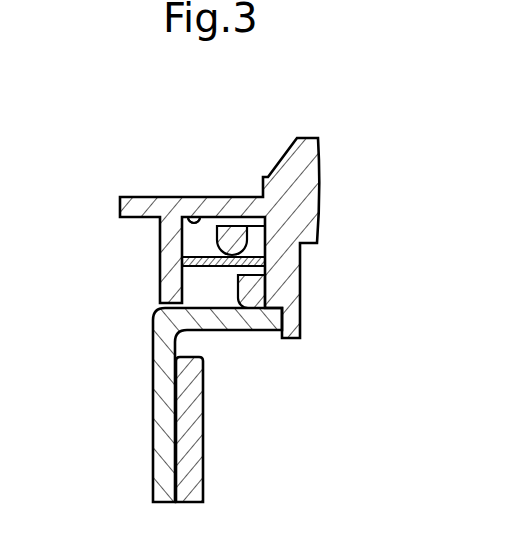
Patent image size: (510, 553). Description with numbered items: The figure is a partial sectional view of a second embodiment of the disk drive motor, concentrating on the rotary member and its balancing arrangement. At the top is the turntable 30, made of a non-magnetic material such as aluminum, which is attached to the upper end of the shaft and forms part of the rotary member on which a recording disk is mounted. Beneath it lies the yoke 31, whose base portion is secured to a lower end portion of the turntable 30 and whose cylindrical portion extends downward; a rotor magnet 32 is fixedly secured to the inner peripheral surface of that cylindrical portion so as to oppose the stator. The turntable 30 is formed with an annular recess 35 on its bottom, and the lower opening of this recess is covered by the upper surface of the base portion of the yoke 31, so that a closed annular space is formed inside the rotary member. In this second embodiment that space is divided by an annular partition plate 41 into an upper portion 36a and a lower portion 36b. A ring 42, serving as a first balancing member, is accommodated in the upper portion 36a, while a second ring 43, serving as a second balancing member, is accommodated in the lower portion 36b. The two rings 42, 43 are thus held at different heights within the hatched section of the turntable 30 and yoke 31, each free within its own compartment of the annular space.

The turntable 30 is at (283, 160).
The yoke 31 is at (158, 381).
The rotor magnet 32 is at (187, 436).
The annular recess 35 is at (192, 218).
The upper portion of the annular space 36a is at (190, 233).
The lower portion of the annular space 36b is at (192, 288).
The annular partition plate 41 is at (192, 268).
The ring (first balancing member) 42 is at (245, 233).
The ring (second balancing member) 43 is at (255, 290).